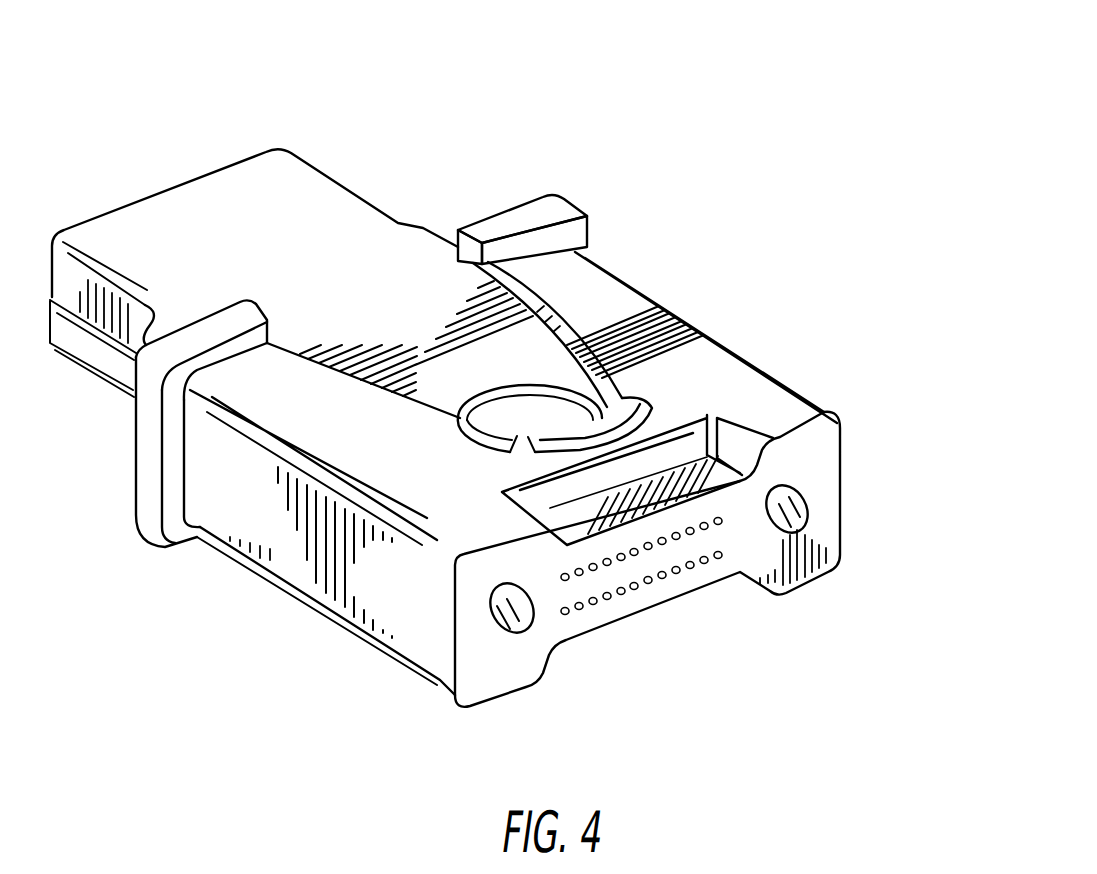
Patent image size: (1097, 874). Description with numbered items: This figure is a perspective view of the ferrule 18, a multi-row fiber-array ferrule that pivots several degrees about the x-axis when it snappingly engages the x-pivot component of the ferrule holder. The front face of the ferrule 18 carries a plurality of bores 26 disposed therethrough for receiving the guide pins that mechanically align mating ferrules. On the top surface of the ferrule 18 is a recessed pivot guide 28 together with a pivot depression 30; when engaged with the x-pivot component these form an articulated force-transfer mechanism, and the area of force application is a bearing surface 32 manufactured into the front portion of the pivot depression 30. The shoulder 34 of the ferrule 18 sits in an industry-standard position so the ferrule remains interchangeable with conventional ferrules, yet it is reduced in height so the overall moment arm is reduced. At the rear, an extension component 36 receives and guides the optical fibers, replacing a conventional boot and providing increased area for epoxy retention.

The ferrule 18 is at (785, 93).
The bores 26 is at (867, 443).
The recessed pivot guide 28 is at (429, 337).
The pivot depression 30 is at (560, 393).
The bearing surface 32 is at (587, 440).
The shoulder 34 is at (516, 210).
The extension component 36 is at (316, 205).